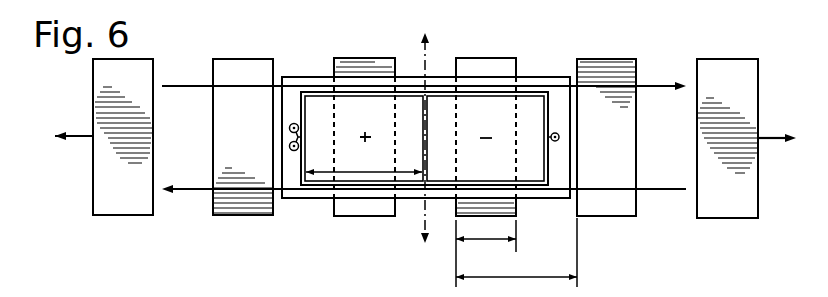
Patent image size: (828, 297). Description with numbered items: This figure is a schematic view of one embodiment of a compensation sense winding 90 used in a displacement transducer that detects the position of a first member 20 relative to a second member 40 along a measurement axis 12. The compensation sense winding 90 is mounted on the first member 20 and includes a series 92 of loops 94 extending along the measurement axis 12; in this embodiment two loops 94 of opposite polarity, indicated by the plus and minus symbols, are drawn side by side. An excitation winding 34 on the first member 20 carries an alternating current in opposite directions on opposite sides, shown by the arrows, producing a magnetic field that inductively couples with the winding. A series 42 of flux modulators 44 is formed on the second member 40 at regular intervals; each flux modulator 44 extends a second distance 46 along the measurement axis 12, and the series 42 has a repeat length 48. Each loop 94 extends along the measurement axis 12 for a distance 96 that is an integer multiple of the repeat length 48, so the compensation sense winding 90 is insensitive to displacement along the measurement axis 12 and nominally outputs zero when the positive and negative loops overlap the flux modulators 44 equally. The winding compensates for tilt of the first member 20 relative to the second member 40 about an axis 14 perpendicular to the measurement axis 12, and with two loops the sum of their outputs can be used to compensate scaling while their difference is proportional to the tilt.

The measurement axis 12 is at (766, 137).
The axis 14 is at (423, 207).
The first member 20 is at (296, 74).
The excitation winding 34 is at (652, 85).
The second member 40 is at (680, 148).
The series of flux modulators 42 is at (280, 50).
The flux modulator 44 is at (230, 216).
The second distance 46 is at (470, 241).
The repeat length 48 is at (535, 277).
The compensation sense winding 90 is at (308, 229).
The series of loops 92 is at (552, 177).
The loop 94 is at (400, 91).
The distance 96 is at (345, 171).